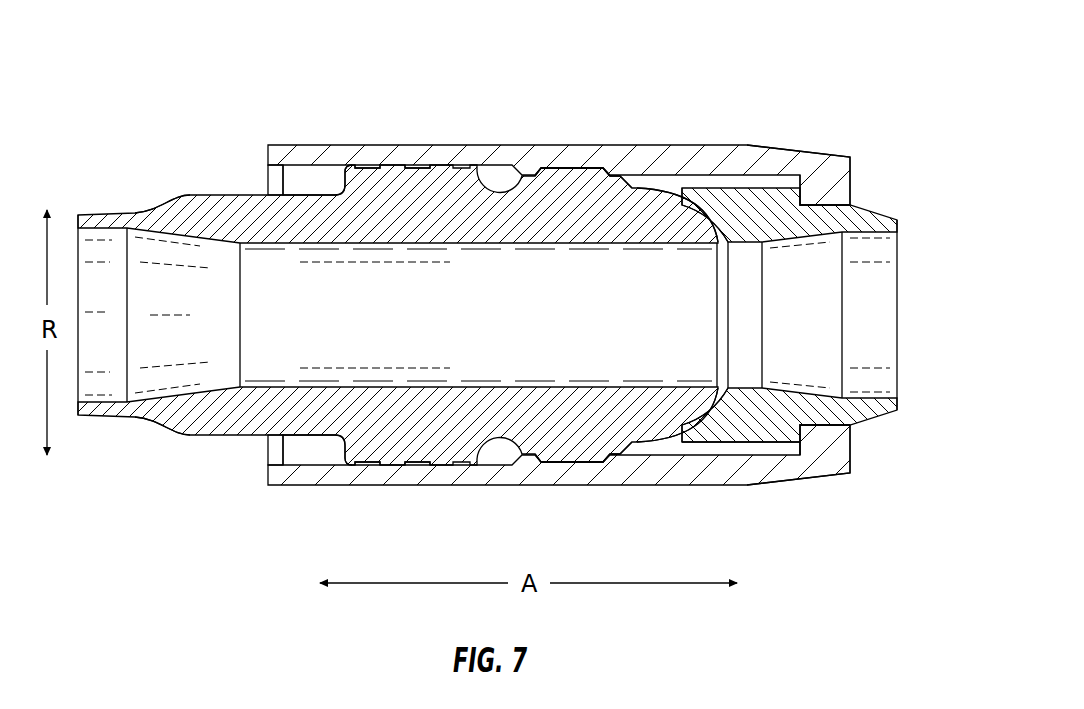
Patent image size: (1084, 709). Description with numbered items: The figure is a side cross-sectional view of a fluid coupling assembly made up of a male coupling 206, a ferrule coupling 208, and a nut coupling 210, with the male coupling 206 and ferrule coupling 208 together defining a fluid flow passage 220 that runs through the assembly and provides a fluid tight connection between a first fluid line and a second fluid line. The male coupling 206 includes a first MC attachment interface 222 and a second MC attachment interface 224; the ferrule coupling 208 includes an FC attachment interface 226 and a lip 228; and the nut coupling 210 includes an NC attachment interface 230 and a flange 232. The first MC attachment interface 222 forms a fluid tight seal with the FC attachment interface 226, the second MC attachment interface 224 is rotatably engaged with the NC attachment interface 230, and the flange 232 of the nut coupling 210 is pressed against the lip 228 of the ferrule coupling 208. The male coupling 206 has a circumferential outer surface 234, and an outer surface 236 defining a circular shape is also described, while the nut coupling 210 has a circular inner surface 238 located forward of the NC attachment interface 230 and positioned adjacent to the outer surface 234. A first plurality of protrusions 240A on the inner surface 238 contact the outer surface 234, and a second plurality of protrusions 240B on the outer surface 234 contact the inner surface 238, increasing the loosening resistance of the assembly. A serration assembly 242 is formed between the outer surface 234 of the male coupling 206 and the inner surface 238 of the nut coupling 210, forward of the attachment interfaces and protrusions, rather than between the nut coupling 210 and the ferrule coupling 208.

The male coupling 206 is at (475, 223).
The ferrule coupling 208 is at (785, 240).
The nut coupling 210 is at (648, 162).
The fluid flow passage 220 is at (340, 340).
The first MC attachment interface 222 is at (714, 208).
The second MC attachment interface 224 is at (586, 167).
The FC attachment interface 226 is at (690, 413).
The lip 228 is at (808, 190).
The NC attachment interface 230 is at (565, 195).
The flange 232 is at (795, 442).
The outer surface 234 is at (226, 189).
The outer surface 236 is at (770, 177).
The inner surface 238 is at (297, 174).
The first plurality of protrusions 240A is at (379, 165).
The second plurality of protrusions 240B is at (406, 165).
The serration assembly 242 is at (262, 168).